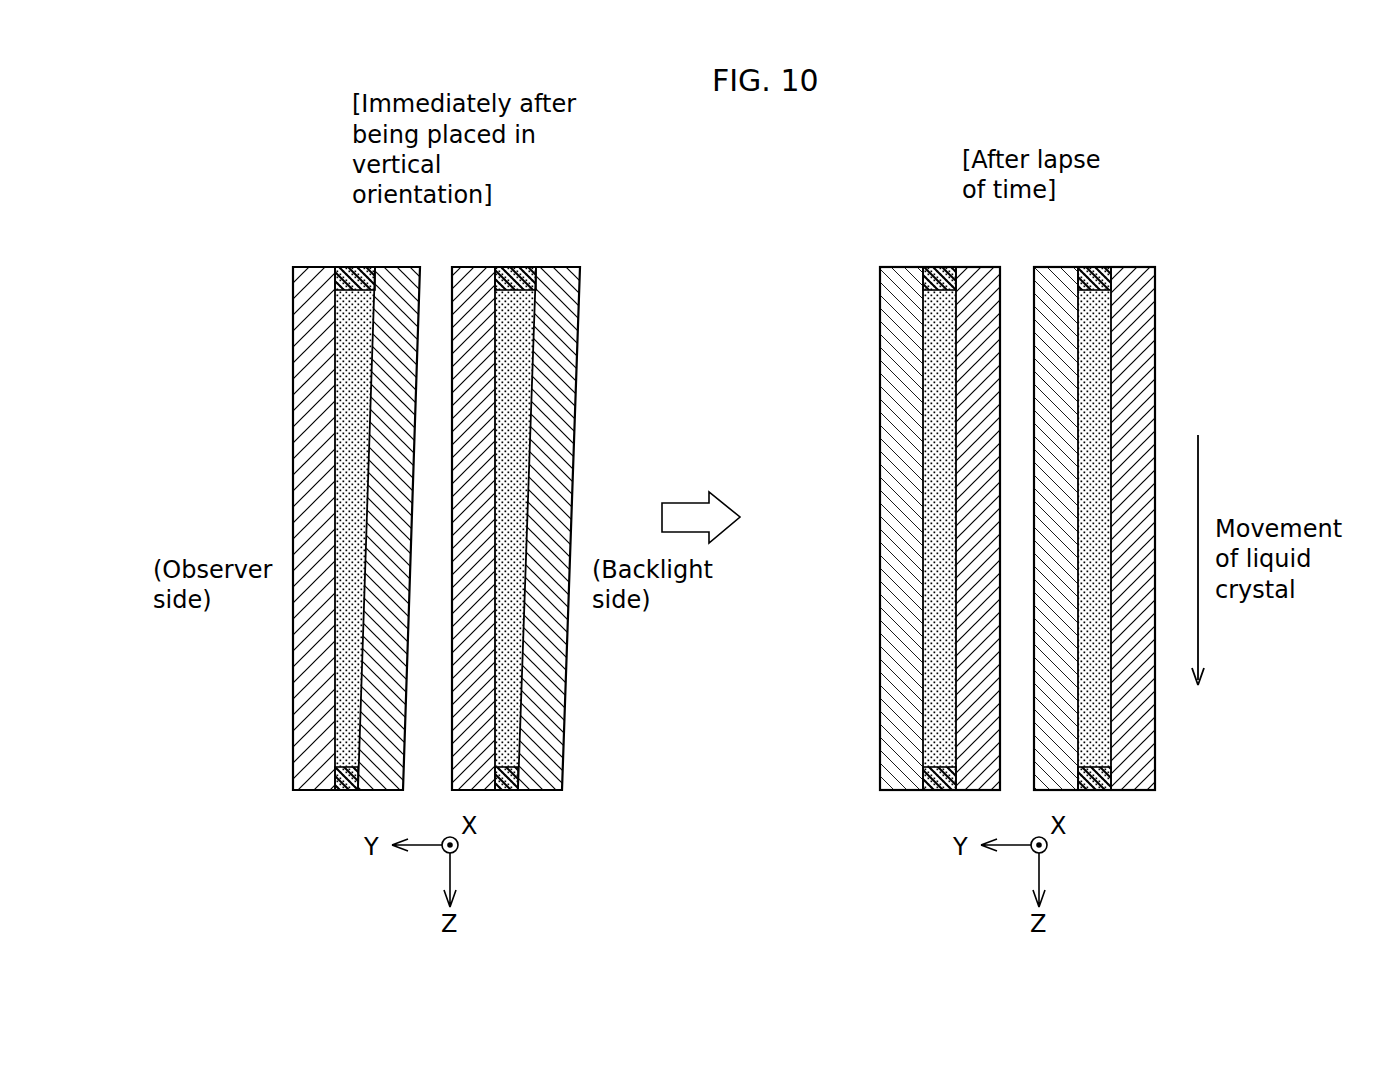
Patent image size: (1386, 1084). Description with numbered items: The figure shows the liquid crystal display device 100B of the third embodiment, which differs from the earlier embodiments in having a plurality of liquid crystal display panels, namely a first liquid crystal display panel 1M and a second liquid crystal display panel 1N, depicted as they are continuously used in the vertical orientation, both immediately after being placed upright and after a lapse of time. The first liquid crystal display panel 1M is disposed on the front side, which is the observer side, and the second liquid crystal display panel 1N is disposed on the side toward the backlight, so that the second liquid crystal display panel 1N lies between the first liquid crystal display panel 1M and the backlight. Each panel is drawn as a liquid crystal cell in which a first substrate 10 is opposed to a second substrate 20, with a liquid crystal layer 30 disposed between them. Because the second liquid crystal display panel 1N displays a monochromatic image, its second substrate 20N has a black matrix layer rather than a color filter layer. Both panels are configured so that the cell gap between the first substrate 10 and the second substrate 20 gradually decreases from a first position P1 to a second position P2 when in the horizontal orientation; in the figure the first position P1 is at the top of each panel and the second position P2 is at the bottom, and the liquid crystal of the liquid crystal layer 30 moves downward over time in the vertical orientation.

The liquid crystal display device 100B is at (306, 229).
The first liquid crystal display panel 1M is at (232, 303).
The second liquid crystal display panel 1N is at (660, 303).
The first substrate 10 is at (400, 336).
The second substrate 20 is at (322, 368).
The second substrate of second liquid crystal display panel 20N is at (473, 378).
The liquid crystal layer 30 is at (355, 408).
The first position P1 is at (322, 294).
The second position P2 is at (322, 772).